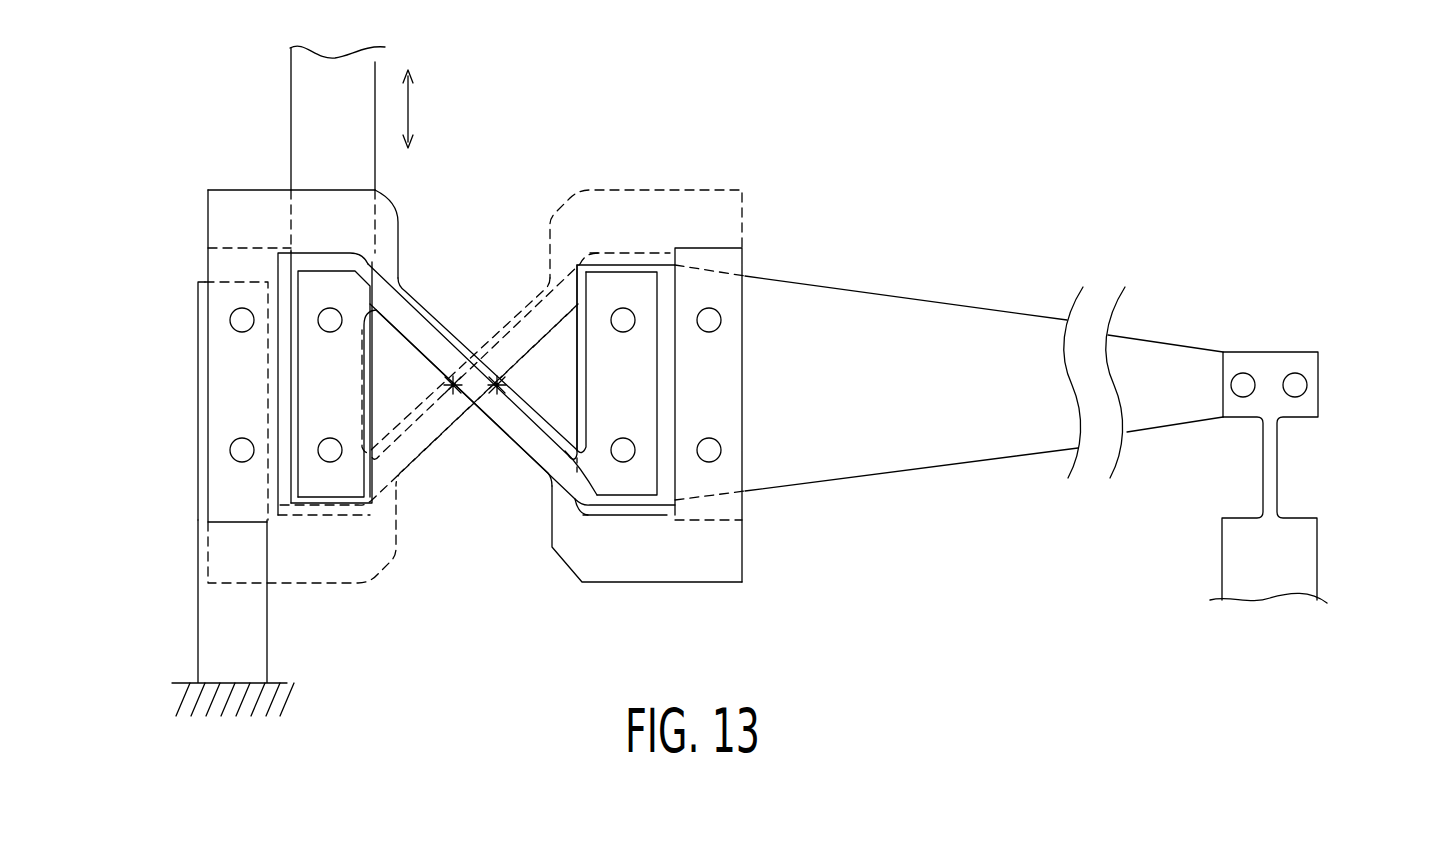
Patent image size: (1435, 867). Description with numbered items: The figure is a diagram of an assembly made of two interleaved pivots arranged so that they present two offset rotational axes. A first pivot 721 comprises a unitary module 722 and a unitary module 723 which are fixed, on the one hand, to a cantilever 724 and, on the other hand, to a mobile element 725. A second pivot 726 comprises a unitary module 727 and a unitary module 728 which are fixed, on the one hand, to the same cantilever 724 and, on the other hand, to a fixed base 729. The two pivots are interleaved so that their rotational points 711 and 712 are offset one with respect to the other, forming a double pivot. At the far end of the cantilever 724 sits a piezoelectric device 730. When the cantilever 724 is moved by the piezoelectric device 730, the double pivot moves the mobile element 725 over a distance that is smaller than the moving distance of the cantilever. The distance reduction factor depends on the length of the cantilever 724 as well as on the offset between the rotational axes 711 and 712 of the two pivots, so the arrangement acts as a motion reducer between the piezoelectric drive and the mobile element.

The rotational point 711 is at (453, 390).
The rotational point 712 is at (497, 380).
The first pivot 721 is at (549, 240).
The unitary module 722 is at (308, 280).
The unitary module 723 is at (694, 216).
The cantilever 724 is at (918, 298).
The mobile element 725 is at (305, 108).
The second pivot 726 is at (365, 541).
The unitary module 727 is at (386, 222).
The unitary module 728 is at (323, 560).
The fixed base 729 is at (226, 635).
The piezoelectric device 730 is at (1318, 533).